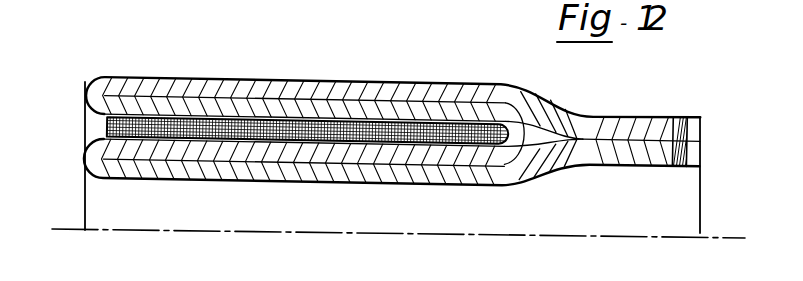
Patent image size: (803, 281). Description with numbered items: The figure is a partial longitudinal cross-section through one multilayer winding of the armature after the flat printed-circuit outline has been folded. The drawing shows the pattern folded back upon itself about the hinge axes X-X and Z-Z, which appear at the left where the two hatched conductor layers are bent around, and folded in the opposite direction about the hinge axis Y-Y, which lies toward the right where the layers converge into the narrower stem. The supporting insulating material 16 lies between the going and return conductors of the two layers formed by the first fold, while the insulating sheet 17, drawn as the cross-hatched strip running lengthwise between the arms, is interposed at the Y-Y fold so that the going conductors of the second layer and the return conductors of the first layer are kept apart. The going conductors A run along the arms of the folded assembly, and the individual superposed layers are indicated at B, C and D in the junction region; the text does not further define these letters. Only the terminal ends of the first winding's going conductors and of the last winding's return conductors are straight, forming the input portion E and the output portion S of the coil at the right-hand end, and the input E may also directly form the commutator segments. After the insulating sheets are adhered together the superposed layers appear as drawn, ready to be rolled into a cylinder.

The insulating support film 16 is at (264, 177).
The insulating sheet 17 is at (367, 115).
The going conductors A is at (149, 179).
The lower junction B is at (497, 138).
The upper junction bend C is at (482, 105).
The upper arm D is at (136, 76).
The input portion E is at (657, 107).
The output portion S is at (654, 157).
The hinge axis X—X X-X is at (86, 86).
The hinge axis Y—Y Y-Y is at (561, 96).
The hinge axis Z—Z Z-Z is at (86, 150).